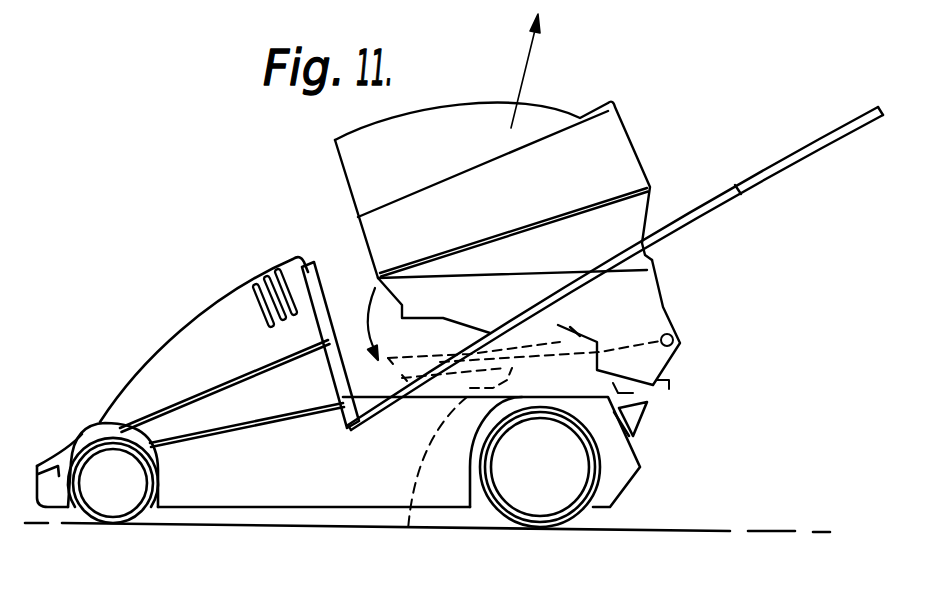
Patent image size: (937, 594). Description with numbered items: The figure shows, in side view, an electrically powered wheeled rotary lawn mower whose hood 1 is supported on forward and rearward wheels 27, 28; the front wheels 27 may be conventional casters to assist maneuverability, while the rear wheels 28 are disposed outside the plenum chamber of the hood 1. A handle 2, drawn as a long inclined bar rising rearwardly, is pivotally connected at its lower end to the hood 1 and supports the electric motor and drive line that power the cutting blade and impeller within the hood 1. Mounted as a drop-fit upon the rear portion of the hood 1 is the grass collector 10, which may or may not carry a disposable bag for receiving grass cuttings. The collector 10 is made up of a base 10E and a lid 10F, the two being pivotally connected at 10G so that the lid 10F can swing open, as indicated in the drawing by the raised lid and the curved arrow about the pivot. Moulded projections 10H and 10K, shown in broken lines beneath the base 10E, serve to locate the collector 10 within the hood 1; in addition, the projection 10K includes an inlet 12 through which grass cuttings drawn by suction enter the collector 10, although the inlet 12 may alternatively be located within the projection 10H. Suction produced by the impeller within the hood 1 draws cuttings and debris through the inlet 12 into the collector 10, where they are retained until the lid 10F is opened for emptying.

The hood 1 is at (255, 478).
The handle 2 is at (807, 157).
The grass collector 10 is at (666, 283).
The base 10E is at (593, 321).
The lid 10F is at (613, 157).
The pivotal connection 10G is at (679, 338).
The moulded projection 10H is at (407, 537).
The moulded projection 10K is at (662, 378).
The inlet 12 is at (645, 386).
The forward wheels 27 is at (110, 514).
The rearward wheels 28 is at (577, 524).